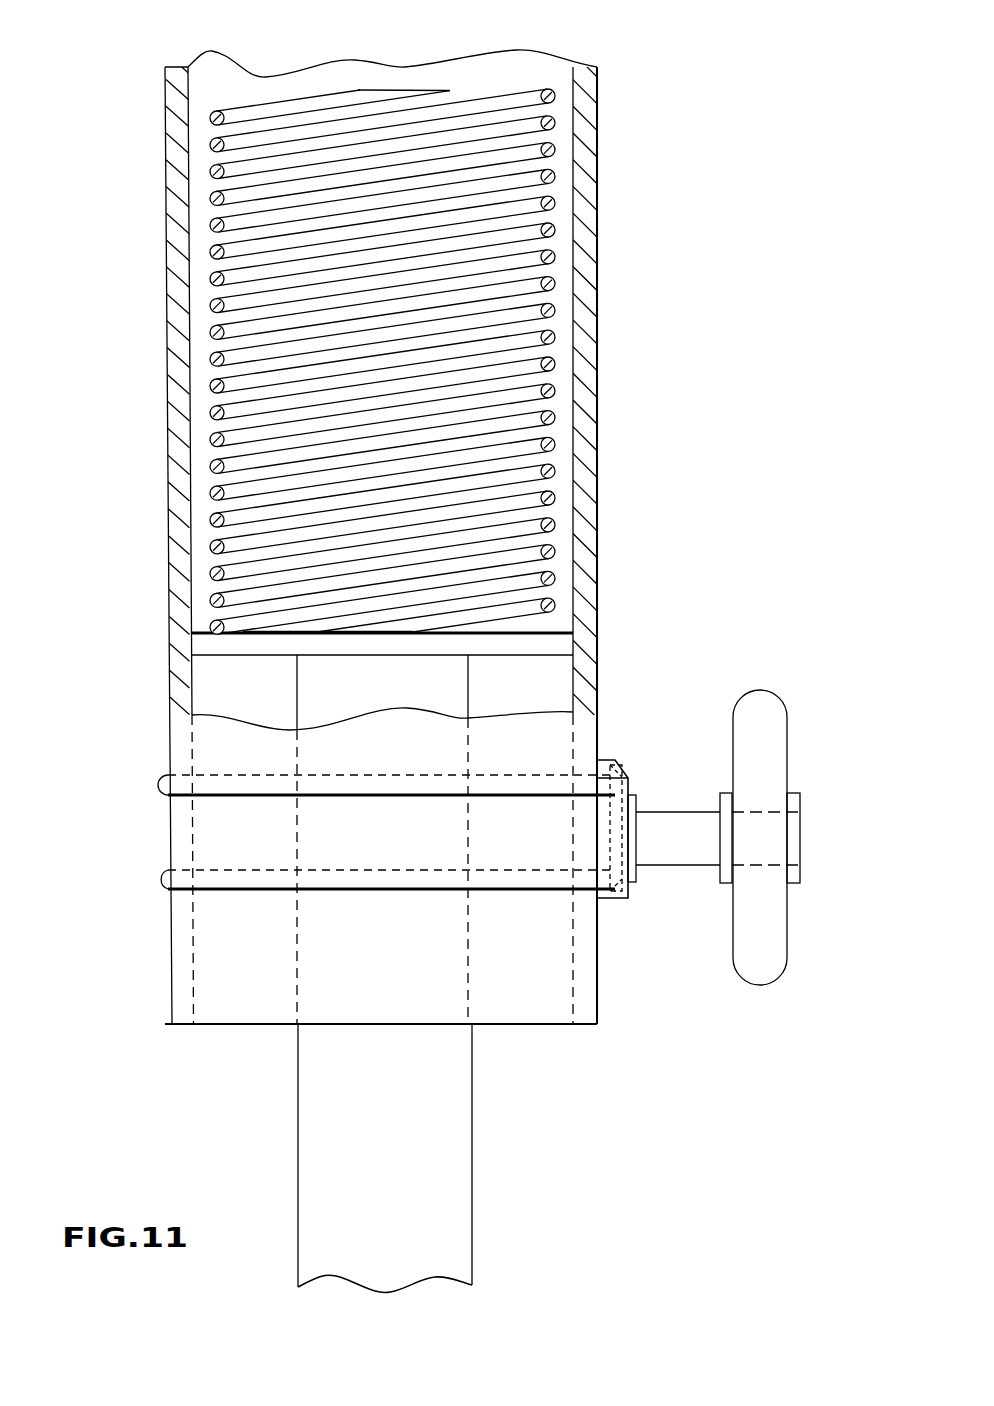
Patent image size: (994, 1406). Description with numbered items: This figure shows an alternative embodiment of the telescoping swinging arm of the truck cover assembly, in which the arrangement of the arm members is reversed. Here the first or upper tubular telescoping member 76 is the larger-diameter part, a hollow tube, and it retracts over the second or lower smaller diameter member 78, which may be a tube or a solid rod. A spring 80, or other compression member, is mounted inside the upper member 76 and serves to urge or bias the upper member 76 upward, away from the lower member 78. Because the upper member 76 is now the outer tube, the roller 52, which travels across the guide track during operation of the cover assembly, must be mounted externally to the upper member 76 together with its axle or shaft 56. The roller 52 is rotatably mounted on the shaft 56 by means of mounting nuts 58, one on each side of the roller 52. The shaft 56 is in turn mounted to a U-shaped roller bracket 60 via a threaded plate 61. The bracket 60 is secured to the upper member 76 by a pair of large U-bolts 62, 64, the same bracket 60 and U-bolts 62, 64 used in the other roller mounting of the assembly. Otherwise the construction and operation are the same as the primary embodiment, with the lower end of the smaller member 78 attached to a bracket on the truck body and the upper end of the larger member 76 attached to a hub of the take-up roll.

The first or upper tubular telescoping member 76 is at (503, 75).
The spring 80 is at (548, 527).
The U-bolt 62 is at (157, 785).
The U-bolt 64 is at (157, 880).
The U-shaped roller bracket 60 is at (612, 760).
The threaded plate 61 is at (636, 797).
The axle or shaft 56 is at (672, 853).
The mounting nuts 58 is at (725, 885).
The roller 52 is at (764, 972).
The second or lower smaller diameter member 78 is at (473, 1180).